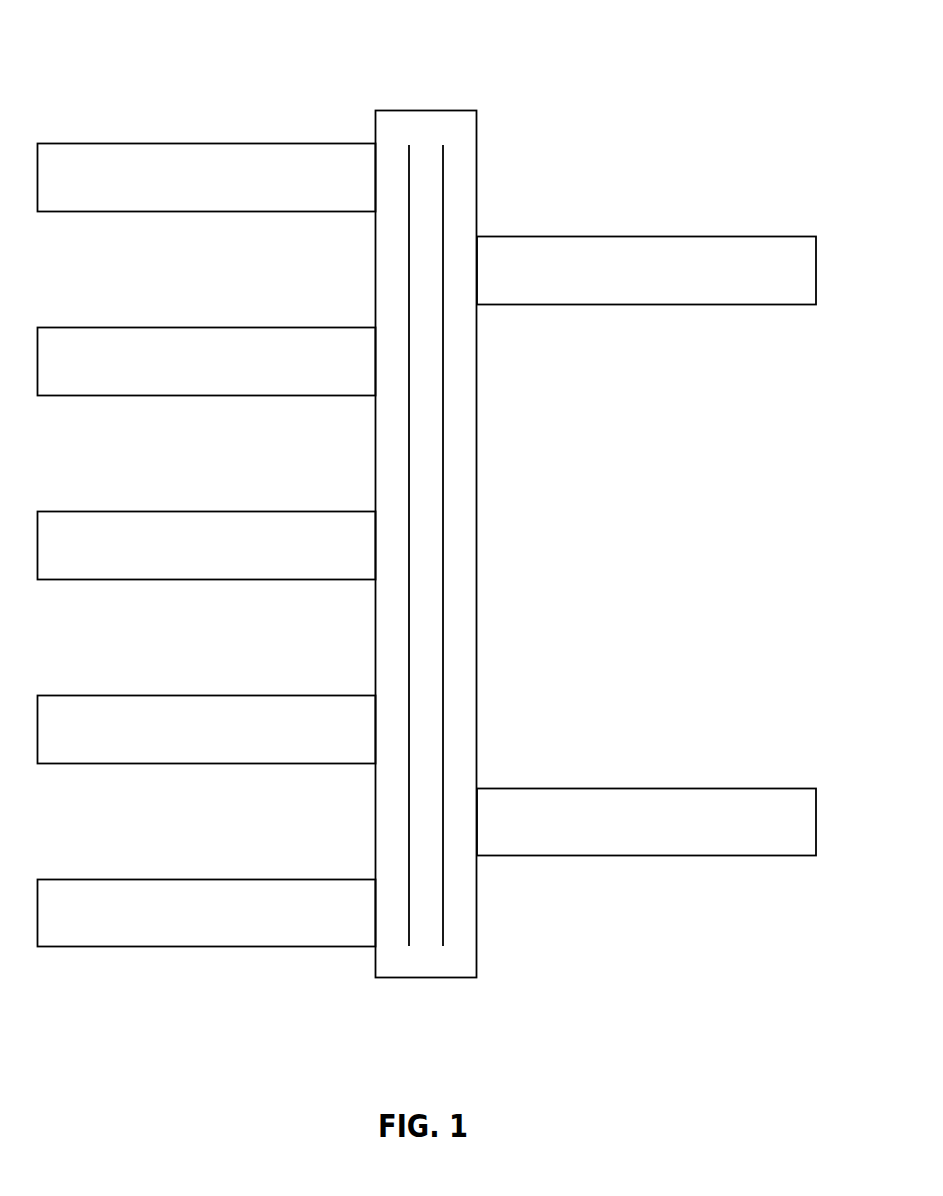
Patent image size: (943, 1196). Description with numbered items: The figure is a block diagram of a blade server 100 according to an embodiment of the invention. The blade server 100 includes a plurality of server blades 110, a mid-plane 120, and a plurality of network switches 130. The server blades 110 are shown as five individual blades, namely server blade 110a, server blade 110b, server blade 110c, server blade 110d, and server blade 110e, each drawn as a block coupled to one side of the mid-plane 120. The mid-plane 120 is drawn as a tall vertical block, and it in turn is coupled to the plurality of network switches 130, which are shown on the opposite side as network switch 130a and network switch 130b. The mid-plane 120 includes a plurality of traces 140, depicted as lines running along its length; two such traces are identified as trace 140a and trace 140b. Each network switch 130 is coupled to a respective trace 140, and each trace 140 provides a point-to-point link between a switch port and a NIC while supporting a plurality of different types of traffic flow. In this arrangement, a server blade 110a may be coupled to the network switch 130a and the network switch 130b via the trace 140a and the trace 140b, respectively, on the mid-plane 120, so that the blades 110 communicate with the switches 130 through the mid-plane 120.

The blade server 100 is at (292, 60).
The plurality of server blades 110 is at (207, 617).
The server blade 110a is at (232, 186).
The server blade 110b is at (232, 370).
The server blade 110c is at (232, 554).
The server blade 110d is at (232, 738).
The server blade 110e is at (232, 922).
The mid-plane 120 is at (477, 480).
The plurality of network switches 130 is at (646, 631).
The network switch 130a is at (621, 280).
The network switch 130b is at (621, 830).
The plurality of traces 140 is at (539, 497).
The trace 140a is at (443, 607).
The trace 140b is at (408, 733).